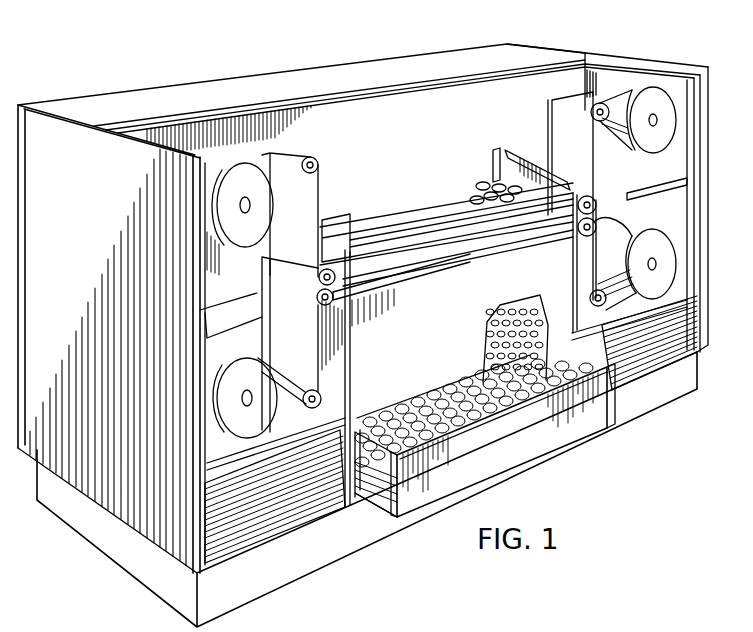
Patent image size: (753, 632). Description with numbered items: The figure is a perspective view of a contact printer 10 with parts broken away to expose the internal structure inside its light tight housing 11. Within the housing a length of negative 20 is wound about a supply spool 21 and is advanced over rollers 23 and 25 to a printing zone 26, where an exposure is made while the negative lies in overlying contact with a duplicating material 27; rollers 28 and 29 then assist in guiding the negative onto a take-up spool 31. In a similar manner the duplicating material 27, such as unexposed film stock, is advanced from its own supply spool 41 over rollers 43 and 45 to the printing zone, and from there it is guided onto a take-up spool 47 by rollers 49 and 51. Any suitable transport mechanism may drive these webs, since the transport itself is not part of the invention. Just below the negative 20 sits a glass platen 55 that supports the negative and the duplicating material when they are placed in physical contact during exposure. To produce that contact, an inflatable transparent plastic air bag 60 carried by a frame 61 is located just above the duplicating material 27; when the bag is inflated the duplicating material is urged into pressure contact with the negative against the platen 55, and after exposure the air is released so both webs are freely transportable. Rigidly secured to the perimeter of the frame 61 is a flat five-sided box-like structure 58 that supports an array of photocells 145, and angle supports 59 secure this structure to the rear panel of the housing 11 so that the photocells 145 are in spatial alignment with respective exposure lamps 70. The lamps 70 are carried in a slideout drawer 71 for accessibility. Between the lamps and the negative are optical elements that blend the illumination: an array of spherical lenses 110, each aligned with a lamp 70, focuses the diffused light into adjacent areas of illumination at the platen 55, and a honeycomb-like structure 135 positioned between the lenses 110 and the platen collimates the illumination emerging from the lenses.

The contact printer 10 is at (600, 44).
The light tight housing 11 is at (317, 78).
The negative 20 is at (628, 265).
The supply spool 21 is at (636, 240).
The roller 23 is at (592, 294).
The roller 25 is at (600, 218).
The printing zone 26 is at (475, 268).
The duplicating material 27 is at (320, 184).
The roller 28 is at (320, 304).
The roller 29 is at (312, 390).
The take-up spool 31 is at (232, 382).
The supply spool 41 is at (668, 140).
The roller 43 is at (592, 116).
The roller 45 is at (598, 198).
The take-up spool 47 is at (268, 200).
The roller 49 is at (320, 272).
The roller 51 is at (312, 155).
The glass platen 55 is at (404, 282).
The box-like structure 58 is at (413, 196).
The angle supports 59 is at (400, 216).
The inflatable transparent plastic air bag 60 is at (360, 276).
The frame 61 is at (423, 235).
The exposure lamps 70 is at (520, 420).
The slideout drawer 71 is at (382, 534).
The spherical lenses 110 is at (486, 362).
The honeycomb-like structure 135 is at (486, 326).
The photocells 145 is at (482, 183).